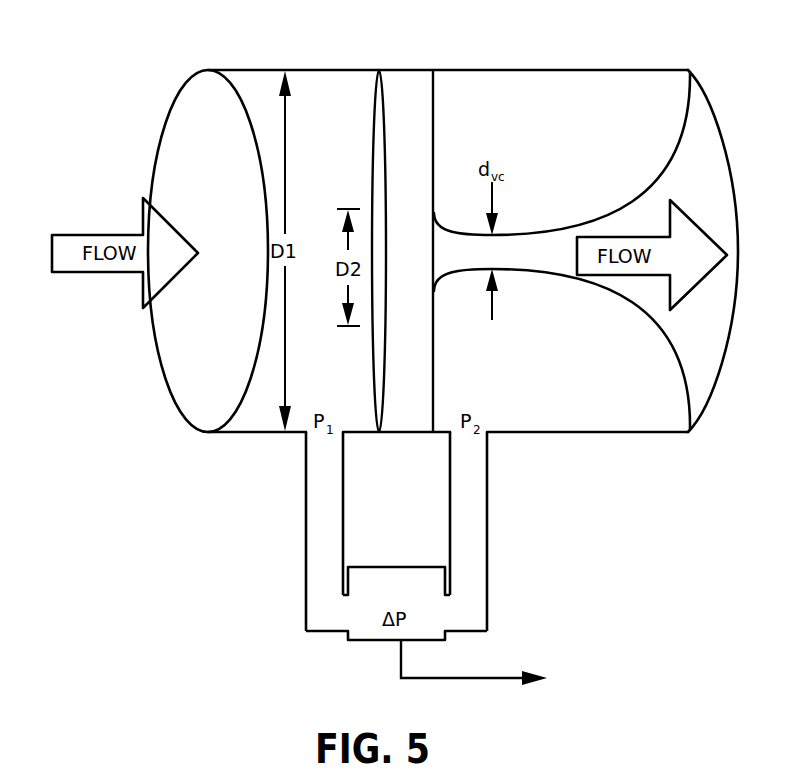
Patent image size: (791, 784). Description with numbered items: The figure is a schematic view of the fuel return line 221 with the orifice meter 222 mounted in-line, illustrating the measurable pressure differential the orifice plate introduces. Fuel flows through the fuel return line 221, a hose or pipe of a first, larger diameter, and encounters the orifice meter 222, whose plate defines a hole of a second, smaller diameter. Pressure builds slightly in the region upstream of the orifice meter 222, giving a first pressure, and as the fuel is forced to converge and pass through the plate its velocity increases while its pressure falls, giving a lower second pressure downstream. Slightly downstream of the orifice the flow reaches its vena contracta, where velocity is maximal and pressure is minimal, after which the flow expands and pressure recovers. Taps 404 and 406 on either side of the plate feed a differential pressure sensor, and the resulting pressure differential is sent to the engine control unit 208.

The fuel return line 221 is at (333, 70).
The orifice meter 222 is at (402, 251).
The first pressure port 404 is at (306, 526).
The second pressure port 406 is at (487, 526).
The engine control unit 208 is at (504, 671).